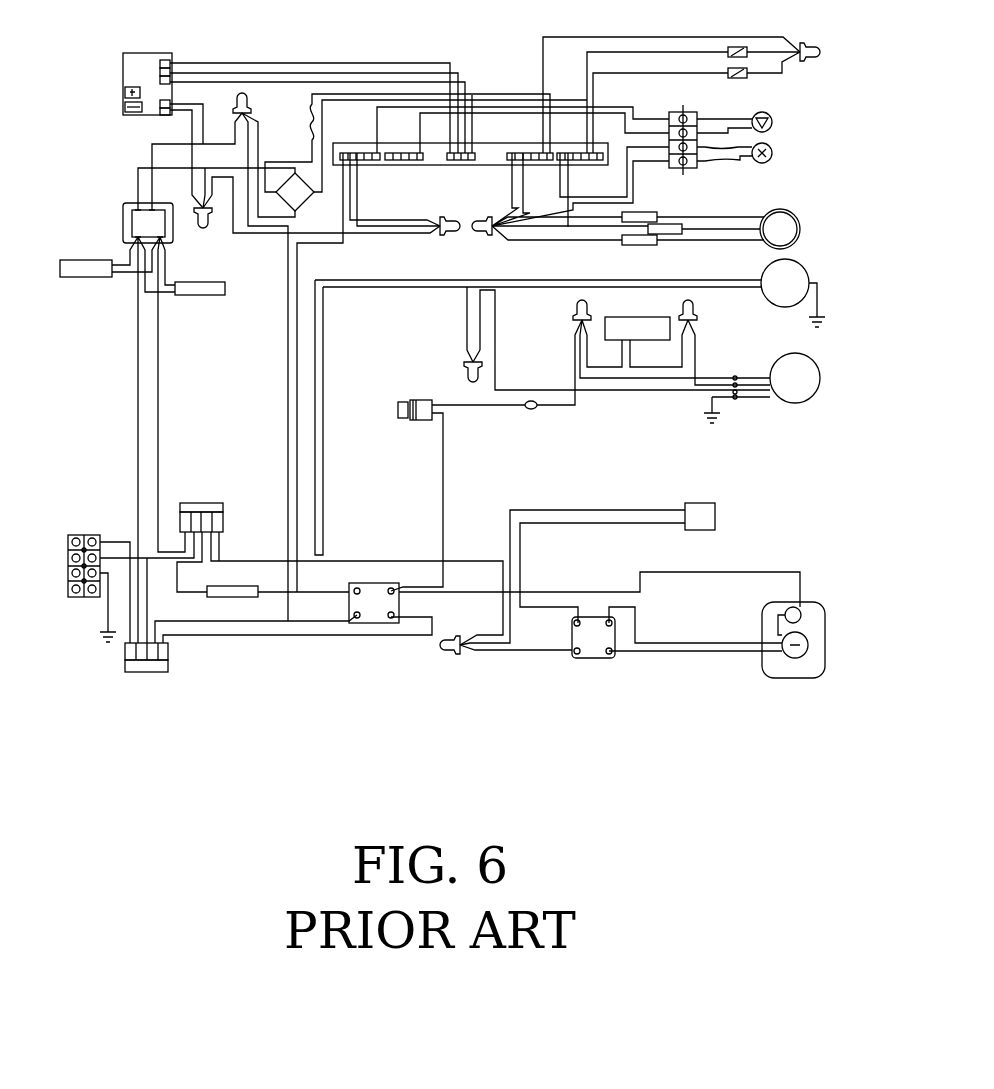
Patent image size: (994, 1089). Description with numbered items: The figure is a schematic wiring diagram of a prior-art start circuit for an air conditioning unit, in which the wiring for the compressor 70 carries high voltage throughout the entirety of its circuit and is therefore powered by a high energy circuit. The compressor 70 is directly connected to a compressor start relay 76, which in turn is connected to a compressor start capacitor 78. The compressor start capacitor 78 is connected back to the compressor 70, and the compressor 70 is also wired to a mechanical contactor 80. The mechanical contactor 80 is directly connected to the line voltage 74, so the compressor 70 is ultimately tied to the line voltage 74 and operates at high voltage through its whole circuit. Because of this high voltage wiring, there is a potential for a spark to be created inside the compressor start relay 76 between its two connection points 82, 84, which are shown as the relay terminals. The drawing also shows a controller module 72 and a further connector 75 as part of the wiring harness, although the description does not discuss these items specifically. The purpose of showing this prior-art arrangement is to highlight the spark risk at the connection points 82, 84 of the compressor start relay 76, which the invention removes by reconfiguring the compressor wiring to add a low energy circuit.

The compressor 70 is at (793, 681).
The controller module 72 is at (118, 208).
The line voltage 74 is at (114, 659).
The connector 75 is at (177, 502).
The compressor start relay 76 is at (585, 692).
The compressor start capacitor 78 is at (714, 506).
The mechanical contactor 80 is at (367, 619).
The connection point 82 is at (574, 628).
The connection point 84 is at (611, 628).